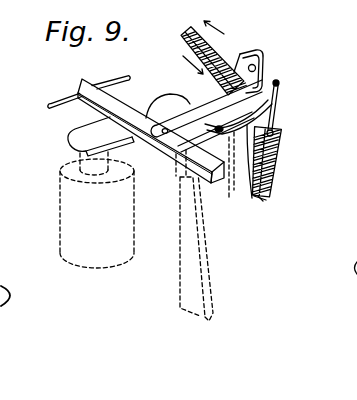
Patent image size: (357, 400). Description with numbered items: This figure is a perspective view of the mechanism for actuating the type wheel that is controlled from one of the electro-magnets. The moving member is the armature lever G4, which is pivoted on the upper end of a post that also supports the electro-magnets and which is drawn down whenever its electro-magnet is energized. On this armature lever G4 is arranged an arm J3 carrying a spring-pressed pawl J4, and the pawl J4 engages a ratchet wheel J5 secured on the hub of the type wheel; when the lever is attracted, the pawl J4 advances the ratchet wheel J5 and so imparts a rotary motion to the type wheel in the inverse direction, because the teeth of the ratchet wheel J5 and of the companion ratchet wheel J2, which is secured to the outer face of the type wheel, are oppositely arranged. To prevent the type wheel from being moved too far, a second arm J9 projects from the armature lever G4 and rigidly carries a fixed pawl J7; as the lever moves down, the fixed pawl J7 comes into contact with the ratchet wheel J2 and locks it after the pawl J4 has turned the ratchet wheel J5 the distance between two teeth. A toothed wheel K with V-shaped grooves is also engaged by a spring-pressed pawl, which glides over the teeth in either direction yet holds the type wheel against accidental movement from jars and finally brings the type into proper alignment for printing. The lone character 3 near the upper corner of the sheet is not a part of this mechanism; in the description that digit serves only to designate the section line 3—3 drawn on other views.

The sheet mark 3 is at (315, 0).
The armature lever G4 is at (117, 104).
The arm J9 is at (212, 111).
The fixed pawl J7 is at (247, 54).
The spring-pressed pawl J4 is at (268, 136).
The ratchet wheel J2 is at (283, 172).
The toothed wheel K is at (270, 200).
The arm J3 is at (250, 172).
The ratchet wheel J5 is at (261, 199).